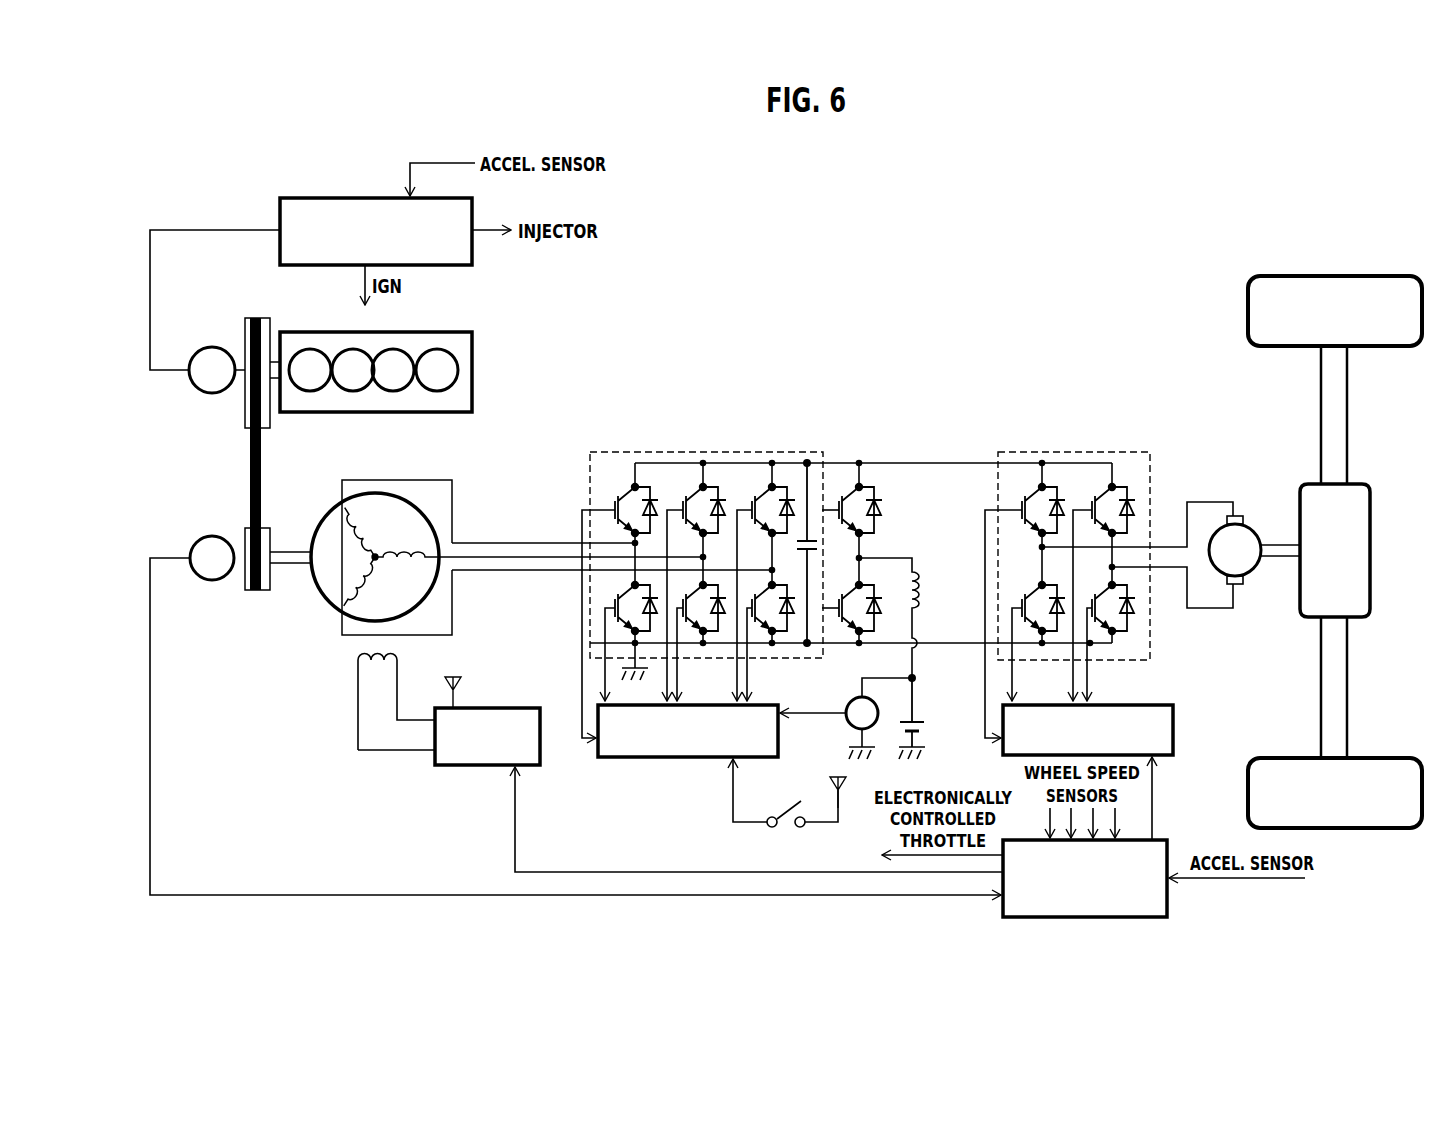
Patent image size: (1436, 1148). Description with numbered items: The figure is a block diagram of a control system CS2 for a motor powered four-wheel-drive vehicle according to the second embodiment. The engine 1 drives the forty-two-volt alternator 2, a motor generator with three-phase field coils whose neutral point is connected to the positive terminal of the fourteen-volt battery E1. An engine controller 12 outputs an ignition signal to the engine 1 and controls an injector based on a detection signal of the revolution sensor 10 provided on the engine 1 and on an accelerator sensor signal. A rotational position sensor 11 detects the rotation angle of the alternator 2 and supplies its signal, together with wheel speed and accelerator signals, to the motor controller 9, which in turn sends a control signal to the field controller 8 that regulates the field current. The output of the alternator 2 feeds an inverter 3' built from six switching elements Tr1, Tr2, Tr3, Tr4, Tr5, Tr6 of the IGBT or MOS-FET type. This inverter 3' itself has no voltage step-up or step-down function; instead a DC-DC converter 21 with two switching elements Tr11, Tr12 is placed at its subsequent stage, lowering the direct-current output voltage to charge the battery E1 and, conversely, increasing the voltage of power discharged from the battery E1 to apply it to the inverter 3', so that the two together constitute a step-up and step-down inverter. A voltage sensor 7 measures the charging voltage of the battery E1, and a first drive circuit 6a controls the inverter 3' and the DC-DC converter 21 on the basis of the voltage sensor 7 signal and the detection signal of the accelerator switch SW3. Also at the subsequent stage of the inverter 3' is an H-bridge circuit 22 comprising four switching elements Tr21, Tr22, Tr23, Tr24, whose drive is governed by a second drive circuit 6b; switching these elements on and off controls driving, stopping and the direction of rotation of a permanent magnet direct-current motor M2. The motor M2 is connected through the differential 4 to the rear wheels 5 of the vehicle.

The engine 1 is at (472, 370).
The 42-V alternator 2 is at (327, 511).
The inverter 3' is at (851, 523).
The differential 4 is at (1370, 542).
The rear wheels 5 is at (1248, 315).
The first drive circuit 6a is at (704, 757).
The second drive circuit 6b is at (1173, 728).
The voltage sensor 7 is at (848, 721).
The field controller 8 is at (477, 765).
The motor controller 9 is at (1160, 840).
The revolution sensor 10 is at (211, 348).
The rotational position sensor 11 is at (212, 580).
The engine controller 12 is at (352, 198).
The DC-DC converter 21 is at (849, 425).
The H-bridge circuit 22 is at (1057, 450).
The switching element Tr1 is at (624, 490).
The switching element Tr2 is at (692, 490).
The switching element Tr3 is at (762, 490).
The switching element Tr4 is at (626, 591).
The switching element Tr5 is at (688, 630).
The switching element Tr6 is at (788, 618).
The switching element Tr11 is at (865, 491).
The switching element Tr12 is at (862, 586).
The switching element Tr21 is at (1035, 490).
The switching element Tr22 is at (1107, 490).
The switching element Tr23 is at (1049, 630).
The switching element Tr24 is at (1119, 628).
The permanent magnet direct-current motor M2 is at (1246, 518).
The 14-V battery E1 is at (928, 730).
The accelerator switch SW3 is at (789, 808).
The control system CS2 is at (789, 264).